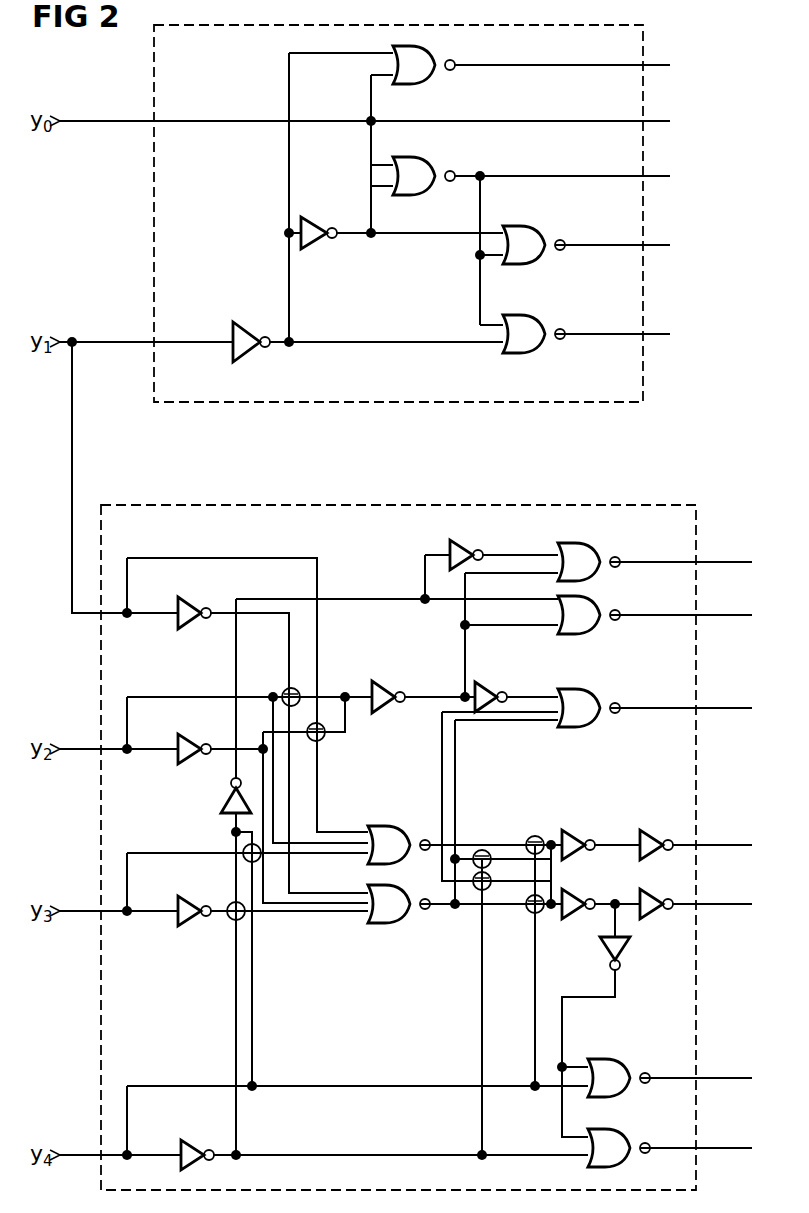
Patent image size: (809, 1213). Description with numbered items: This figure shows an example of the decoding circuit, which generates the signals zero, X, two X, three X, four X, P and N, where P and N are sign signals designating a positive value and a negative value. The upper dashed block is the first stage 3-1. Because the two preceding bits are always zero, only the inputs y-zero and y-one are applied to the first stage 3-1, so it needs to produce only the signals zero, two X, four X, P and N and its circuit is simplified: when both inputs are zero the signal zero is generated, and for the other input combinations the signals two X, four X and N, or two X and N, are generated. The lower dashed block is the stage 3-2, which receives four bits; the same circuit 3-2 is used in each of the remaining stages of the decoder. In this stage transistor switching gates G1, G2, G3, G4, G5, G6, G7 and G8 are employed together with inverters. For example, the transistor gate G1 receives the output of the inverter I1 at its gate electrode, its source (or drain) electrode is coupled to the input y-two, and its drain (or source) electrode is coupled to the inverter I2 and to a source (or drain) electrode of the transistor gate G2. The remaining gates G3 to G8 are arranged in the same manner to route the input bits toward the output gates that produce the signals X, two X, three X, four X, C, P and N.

The first stage 3-1 is at (588, 27).
The second stage 3-2 is at (632, 505).
The inverter I1 is at (185, 630).
The inverter I2 is at (381, 681).
The transistor switching gate G1 is at (288, 689).
The transistor switching gate G2 is at (322, 740).
The transistor switching gate G3 is at (244, 847).
The transistor switching gate G4 is at (233, 920).
The transistor switching gate G5 is at (482, 850).
The transistor switching gate G6 is at (480, 891).
The transistor switching gate G7 is at (529, 838).
The transistor switching gate G8 is at (530, 912).